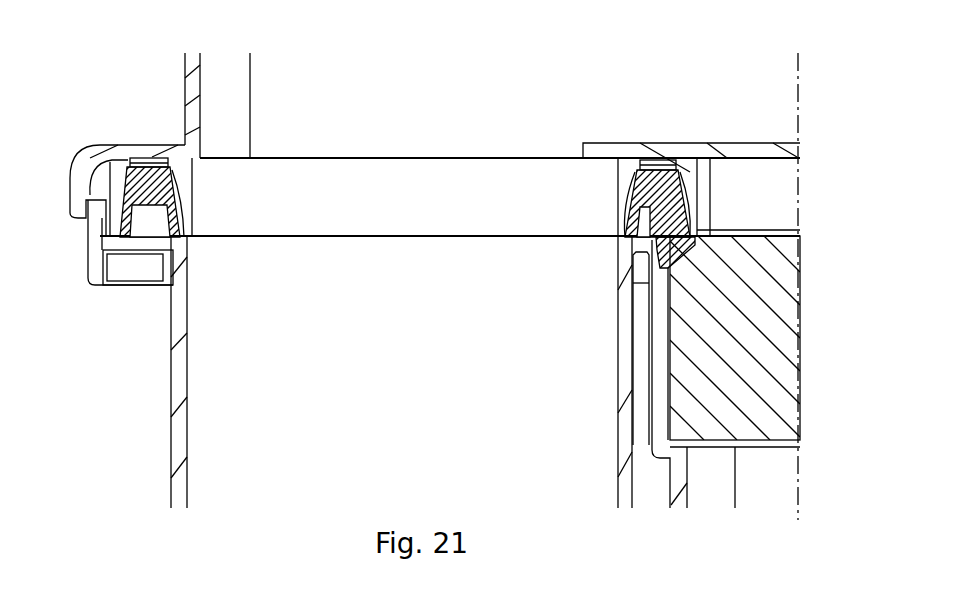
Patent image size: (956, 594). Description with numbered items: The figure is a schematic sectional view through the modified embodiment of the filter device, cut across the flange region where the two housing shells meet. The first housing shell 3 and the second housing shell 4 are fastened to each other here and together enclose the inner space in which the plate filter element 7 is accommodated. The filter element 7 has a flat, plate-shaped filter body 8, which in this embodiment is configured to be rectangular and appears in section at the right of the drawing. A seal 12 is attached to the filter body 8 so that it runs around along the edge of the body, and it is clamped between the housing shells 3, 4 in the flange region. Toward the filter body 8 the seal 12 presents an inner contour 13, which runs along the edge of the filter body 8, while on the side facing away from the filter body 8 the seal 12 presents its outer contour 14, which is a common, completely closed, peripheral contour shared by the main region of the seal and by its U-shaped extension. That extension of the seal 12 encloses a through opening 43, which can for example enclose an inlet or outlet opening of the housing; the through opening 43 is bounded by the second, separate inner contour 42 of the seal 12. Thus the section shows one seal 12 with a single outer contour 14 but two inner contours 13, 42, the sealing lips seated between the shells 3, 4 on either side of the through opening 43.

The first housing shell 3 is at (183, 72).
The second housing shell 4 is at (167, 442).
The plate filter element 7 is at (822, 215).
The filter body 8 is at (788, 298).
The seal 12 is at (118, 240).
The inner contour 13 is at (683, 197).
The outer contour 14 is at (118, 185).
The inner contour 42 is at (183, 200).
The through opening 43 is at (458, 207).